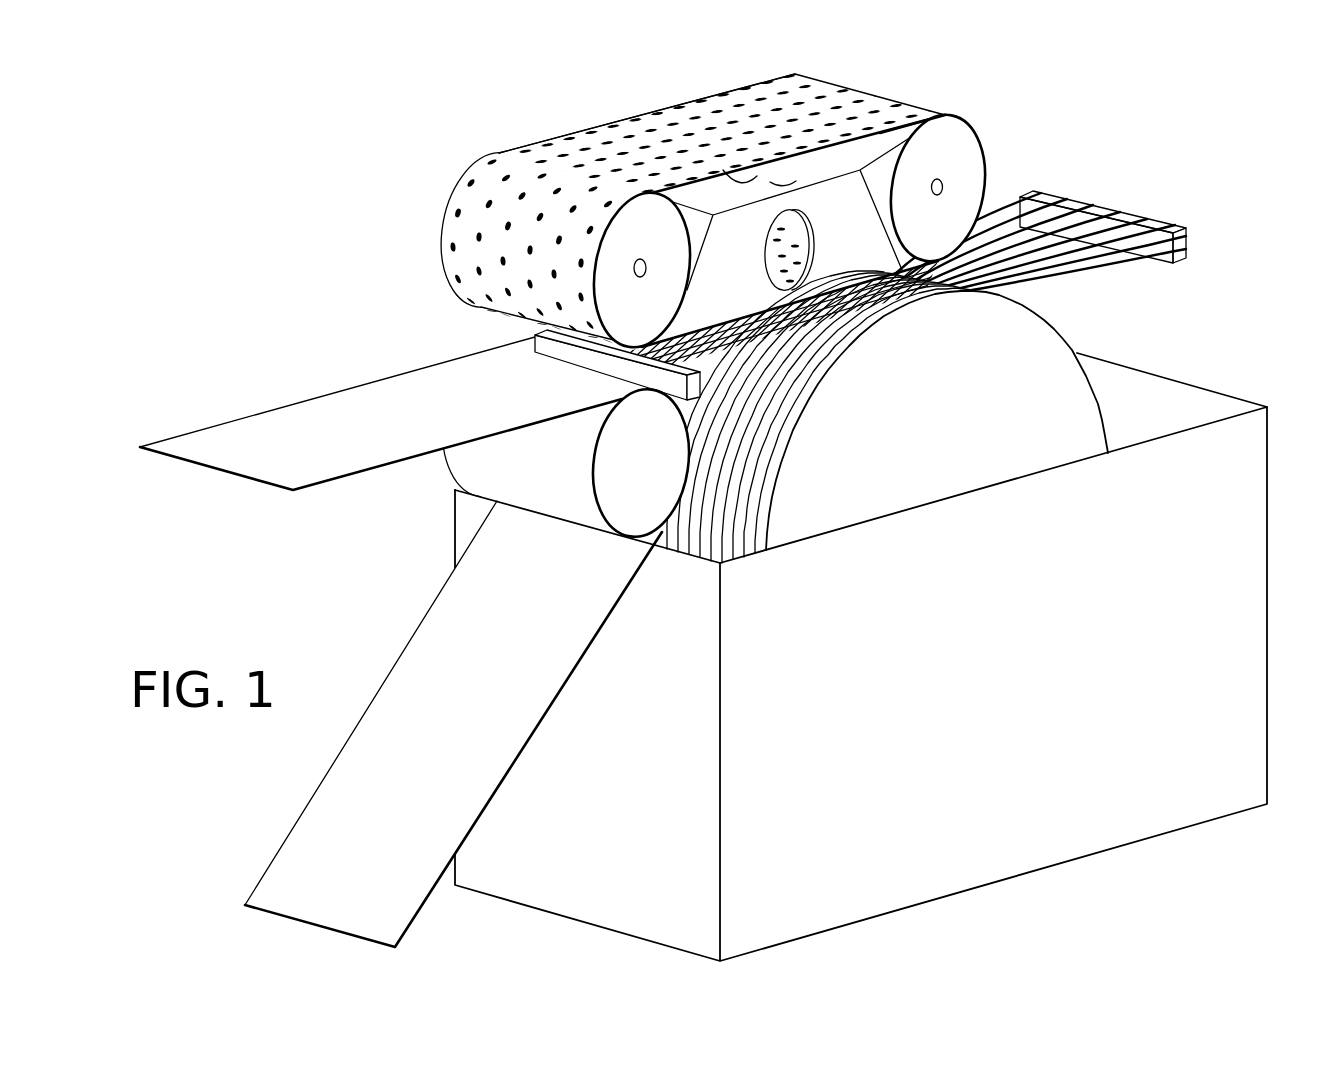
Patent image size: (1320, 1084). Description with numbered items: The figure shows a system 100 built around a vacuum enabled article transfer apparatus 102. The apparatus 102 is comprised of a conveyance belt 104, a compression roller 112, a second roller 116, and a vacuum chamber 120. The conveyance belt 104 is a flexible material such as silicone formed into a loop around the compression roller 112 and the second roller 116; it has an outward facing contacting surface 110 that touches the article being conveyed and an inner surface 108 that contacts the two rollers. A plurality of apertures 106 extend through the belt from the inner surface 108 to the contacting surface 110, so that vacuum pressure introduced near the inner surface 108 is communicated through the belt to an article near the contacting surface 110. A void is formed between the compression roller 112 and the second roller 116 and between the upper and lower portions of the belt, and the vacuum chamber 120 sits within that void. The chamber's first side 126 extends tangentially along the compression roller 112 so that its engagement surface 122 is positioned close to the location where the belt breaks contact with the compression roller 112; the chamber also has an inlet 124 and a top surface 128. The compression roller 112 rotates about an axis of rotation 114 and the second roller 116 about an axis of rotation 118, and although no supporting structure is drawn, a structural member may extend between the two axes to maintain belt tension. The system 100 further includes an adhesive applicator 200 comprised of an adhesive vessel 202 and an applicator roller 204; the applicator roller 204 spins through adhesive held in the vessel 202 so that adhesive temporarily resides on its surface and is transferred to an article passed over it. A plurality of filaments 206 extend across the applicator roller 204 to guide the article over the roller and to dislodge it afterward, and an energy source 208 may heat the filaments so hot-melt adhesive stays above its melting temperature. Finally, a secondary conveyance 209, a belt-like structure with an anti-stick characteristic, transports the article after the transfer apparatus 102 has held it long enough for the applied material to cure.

The system 100 is at (613, 221).
The vacuum enabled article transfer apparatus 102 is at (706, 221).
The conveyance belt 104 is at (652, 210).
The plurality of apertures 106 is at (465, 247).
The inner surface 108 is at (745, 168).
The contacting surface 110 is at (517, 157).
The compression roller 112 is at (957, 143).
The axis of rotation 114 is at (945, 188).
The second roller 116 is at (610, 263).
The axis of rotation 118 is at (643, 277).
The vacuum chamber 120 is at (710, 285).
The engagement surface 122 is at (873, 280).
The inlet 124 is at (772, 229).
The first side 126 is at (905, 165).
The top surface 128 is at (783, 178).
The adhesive applicator 200 is at (703, 576).
The adhesive vessel 202 is at (953, 835).
The applicator roller 204 is at (1023, 446).
The plurality of filaments 206 is at (1070, 258).
The energy source 208 is at (1167, 233).
The secondary conveyance 209 is at (370, 402).